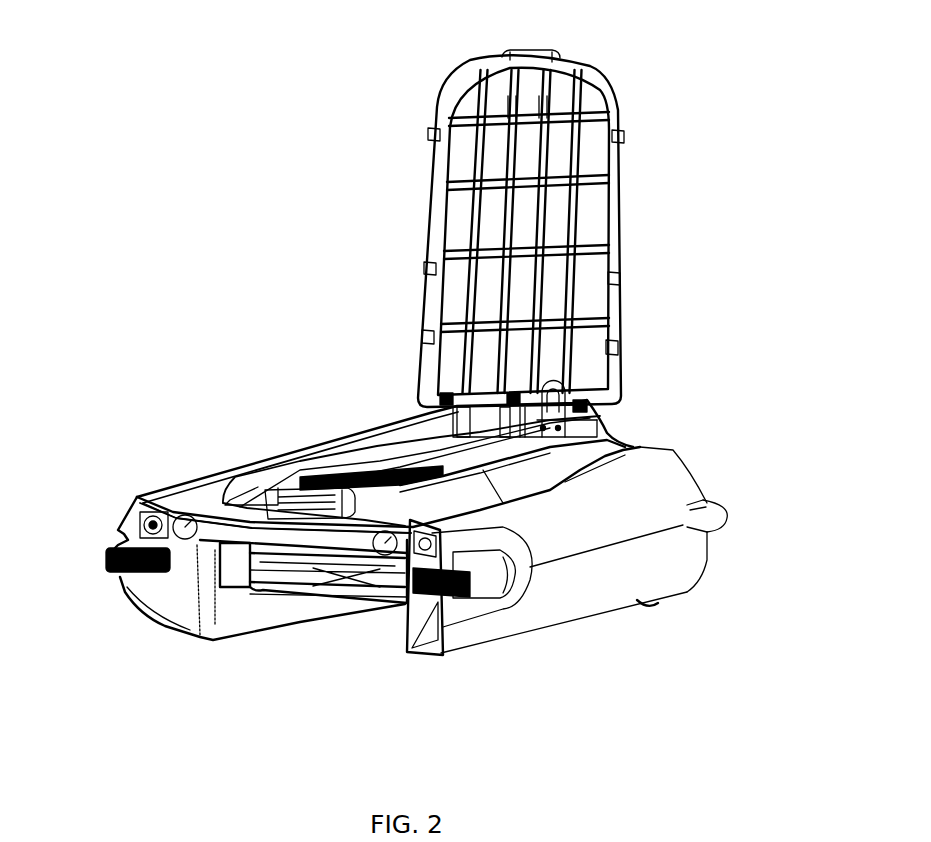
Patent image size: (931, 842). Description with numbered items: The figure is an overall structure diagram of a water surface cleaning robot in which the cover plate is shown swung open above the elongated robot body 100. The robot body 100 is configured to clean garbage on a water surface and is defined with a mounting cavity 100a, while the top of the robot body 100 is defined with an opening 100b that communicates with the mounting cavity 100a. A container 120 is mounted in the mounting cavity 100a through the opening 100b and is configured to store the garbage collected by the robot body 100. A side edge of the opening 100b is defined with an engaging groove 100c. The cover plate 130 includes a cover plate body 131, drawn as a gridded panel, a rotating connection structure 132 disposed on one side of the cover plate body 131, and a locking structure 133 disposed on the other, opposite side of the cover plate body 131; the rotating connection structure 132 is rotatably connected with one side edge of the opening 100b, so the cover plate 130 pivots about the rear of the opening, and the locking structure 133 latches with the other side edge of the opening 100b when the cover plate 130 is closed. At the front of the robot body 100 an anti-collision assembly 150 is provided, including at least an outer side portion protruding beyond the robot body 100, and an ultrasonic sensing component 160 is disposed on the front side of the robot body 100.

The robot body 100 is at (380, 517).
The mounting cavity 100a is at (286, 462).
The opening 100b is at (365, 397).
The engaging groove 100c is at (258, 490).
The container 120 is at (346, 456).
The cover plate 130 is at (572, 222).
The cover plate body 131 is at (465, 256).
The rotating connection structure 132 is at (523, 417).
The locking structure 133 is at (543, 60).
The anti-collision assembly 150 is at (110, 562).
The ultrasonic sensing component 160 is at (153, 534).